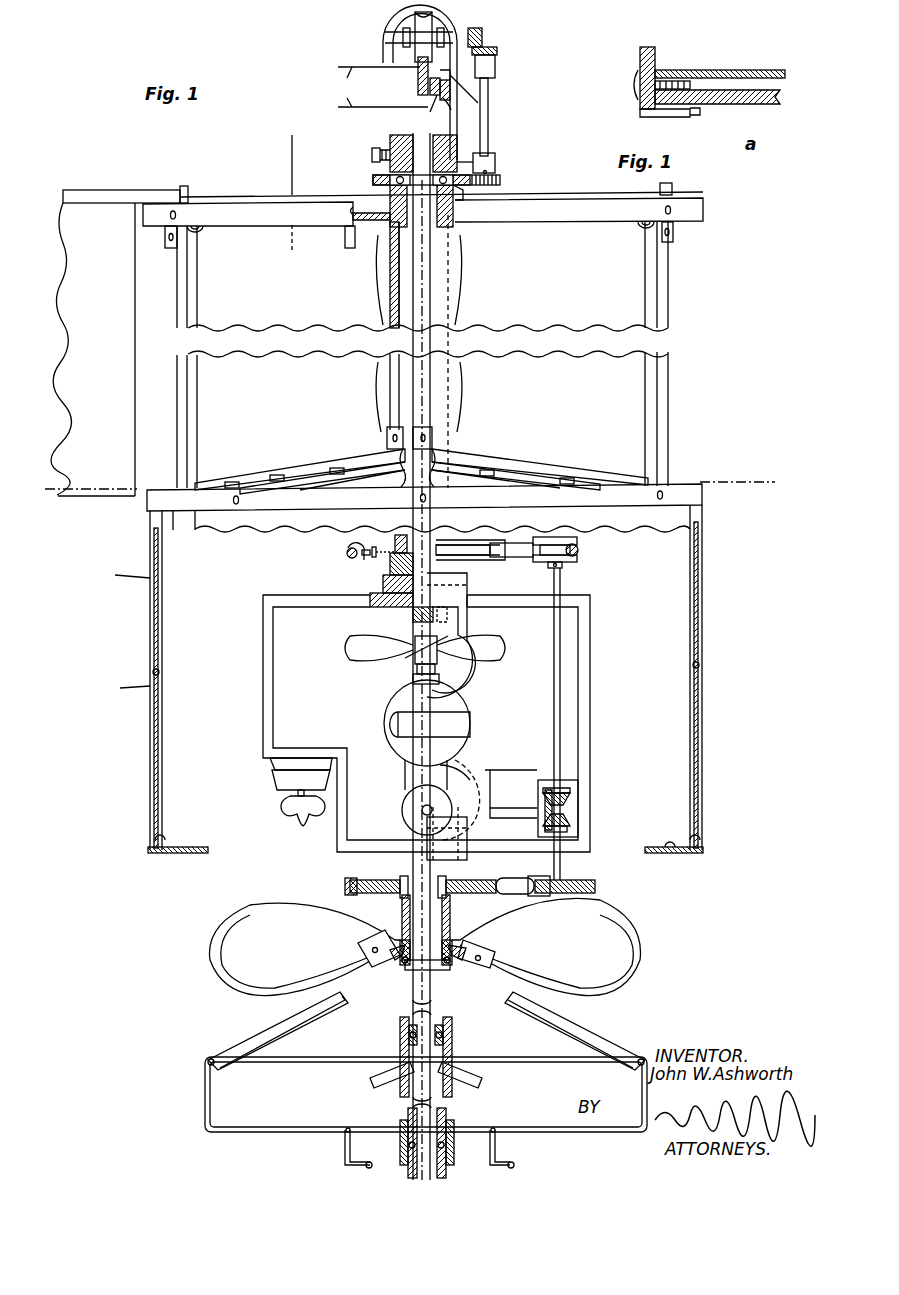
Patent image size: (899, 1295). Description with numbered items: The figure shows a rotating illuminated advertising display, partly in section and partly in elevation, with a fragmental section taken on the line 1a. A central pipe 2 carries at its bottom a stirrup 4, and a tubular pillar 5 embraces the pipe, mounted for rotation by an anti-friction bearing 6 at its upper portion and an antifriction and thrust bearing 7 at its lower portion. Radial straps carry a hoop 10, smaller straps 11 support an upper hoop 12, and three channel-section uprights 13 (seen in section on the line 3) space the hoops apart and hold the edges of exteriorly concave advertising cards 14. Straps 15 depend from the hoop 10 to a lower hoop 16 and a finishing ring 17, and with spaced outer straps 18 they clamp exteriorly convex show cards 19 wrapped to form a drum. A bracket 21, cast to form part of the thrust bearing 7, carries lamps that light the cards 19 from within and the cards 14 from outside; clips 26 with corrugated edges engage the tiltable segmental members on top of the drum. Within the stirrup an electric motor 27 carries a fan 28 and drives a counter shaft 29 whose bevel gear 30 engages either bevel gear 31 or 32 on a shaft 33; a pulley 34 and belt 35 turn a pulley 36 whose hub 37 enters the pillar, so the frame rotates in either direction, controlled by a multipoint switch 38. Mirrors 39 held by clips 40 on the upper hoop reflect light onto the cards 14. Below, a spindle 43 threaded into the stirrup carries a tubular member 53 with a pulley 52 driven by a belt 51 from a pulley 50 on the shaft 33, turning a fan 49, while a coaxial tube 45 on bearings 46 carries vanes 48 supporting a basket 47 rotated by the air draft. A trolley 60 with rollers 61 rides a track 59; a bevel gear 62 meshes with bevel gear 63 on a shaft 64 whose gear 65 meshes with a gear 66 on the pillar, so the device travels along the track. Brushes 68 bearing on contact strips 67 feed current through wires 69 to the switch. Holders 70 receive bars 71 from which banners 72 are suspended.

In FIG. 1, the section line 1a is at (298, 195).
In FIG. 1, the pipe 2 is at (438, 255).
In FIG. 1, the section line 3 is at (410, 475).
In FIG. 1, the stirrup 4 is at (262, 648).
In FIG. 1, the tubular pillar 5 is at (388, 268).
In FIG. 1, the anti-friction bearing 6 is at (458, 190).
In FIG. 1, the antifriction and thrust bearing 7 is at (382, 578).
In FIG. 1, the hoop 10 is at (695, 490).
In FIG. 1, the smaller straps 11 is at (168, 248).
In FIG. 1, the upper hoop 12 is at (237, 200).
In FIG. 1A, the upper hoop 12 is at (658, 68).
In FIG. 1, the uprights 13 is at (670, 290).
In FIG. 1, the advertising cards 14 is at (428, 333).
In FIG. 1, the straps 15 is at (197, 530).
In FIG. 1, the hoop 16 is at (150, 840).
In FIG. 1, the finishing ring 17 is at (180, 854).
In FIG. 1, the outer strap 18 is at (122, 686).
In FIG. 1, the show cards 19 is at (121, 574).
In FIG. 1, the bracket 21 is at (470, 588).
In FIG. 1, the clips 26 is at (428, 450).
In FIG. 1, the electric motor 27 is at (385, 712).
In FIG. 1, the fan 28 is at (345, 650).
In FIG. 1, the counter shaft 29 is at (493, 807).
In FIG. 1, the bevel gear 30 is at (545, 780).
In FIG. 1, the bevel gear 31 is at (572, 822).
In FIG. 1, the bevel gear 32 is at (572, 797).
In FIG. 1, the shaft 33 is at (562, 698).
In FIG. 1, the pulley 34 is at (565, 566).
In FIG. 1, the belt 35 is at (350, 560).
In FIG. 1, the pulley 36 is at (348, 543).
In FIG. 1, the hub 37 is at (400, 534).
In FIG. 1, the switch 38 is at (278, 782).
In FIG. 1A, the mirrors 39 is at (700, 115).
In FIG. 1, the clips 40 is at (202, 237).
In FIG. 1A, the clips 40 is at (639, 62).
In FIG. 1, the spindle 43 is at (433, 918).
In FIG. 1, the coaxial tube 45 is at (452, 1005).
In FIG. 1, the bearings 46 is at (400, 968).
In FIG. 1, the basket 47 is at (204, 1090).
In FIG. 1, the vanes 48 is at (298, 1043).
In FIG. 1, the fan 49 is at (215, 950).
In FIG. 1, the pulley 50 is at (596, 884).
In FIG. 1, the belt 51 is at (517, 895).
In FIG. 1, the pulley 52 is at (370, 895).
In FIG. 1, the tubular member 53 is at (405, 910).
In FIG. 1, the track 59 is at (418, 72).
In FIG. 1, the trolley 60 is at (460, 123).
In FIG. 1, the rollers 61 is at (412, 25).
In FIG. 1, the bevel gear 62 is at (482, 33).
In FIG. 1, the bevel gear 63 is at (497, 50).
In FIG. 1, the shaft 64 is at (490, 142).
In FIG. 1, the gear 65 is at (500, 178).
In FIG. 1, the gear 66 is at (373, 178).
In FIG. 1, the contact strips 67 is at (429, 103).
In FIG. 1, the brushes 68 is at (461, 93).
In FIG. 1, the wires 69 is at (383, 87).
In FIG. 1, the holders 70 is at (186, 188).
In FIG. 1A, the holders 70 is at (640, 104).
In FIG. 1, the bars 71 is at (100, 190).
In FIG. 1, the banners 72 is at (128, 288).